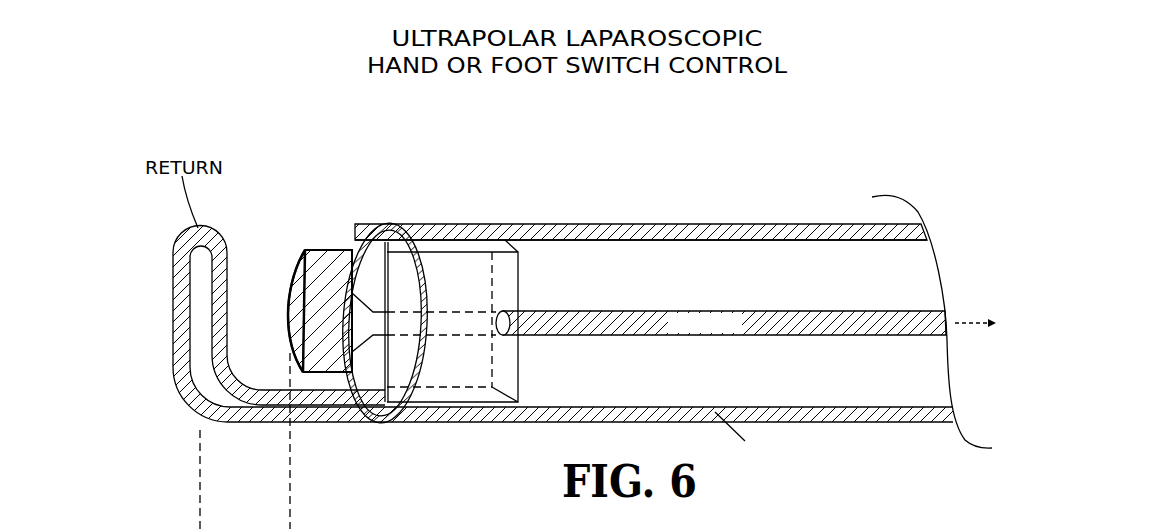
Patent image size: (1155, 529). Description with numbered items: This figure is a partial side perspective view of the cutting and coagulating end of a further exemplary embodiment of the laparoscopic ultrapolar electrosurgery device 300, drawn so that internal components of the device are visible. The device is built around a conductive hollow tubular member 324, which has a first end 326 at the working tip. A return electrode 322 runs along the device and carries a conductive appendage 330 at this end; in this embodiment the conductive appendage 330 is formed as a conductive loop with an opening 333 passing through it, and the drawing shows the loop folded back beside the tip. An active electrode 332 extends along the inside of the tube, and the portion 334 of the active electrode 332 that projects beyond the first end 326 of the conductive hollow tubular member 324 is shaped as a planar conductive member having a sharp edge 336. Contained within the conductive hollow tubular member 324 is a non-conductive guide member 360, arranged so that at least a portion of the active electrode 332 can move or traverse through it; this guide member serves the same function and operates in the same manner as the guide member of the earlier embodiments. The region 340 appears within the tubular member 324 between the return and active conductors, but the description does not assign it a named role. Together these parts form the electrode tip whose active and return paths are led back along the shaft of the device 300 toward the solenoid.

The laparoscopic ultrapolar electrosurgery device 300 is at (722, 175).
The return electrode 322 is at (526, 426).
The conductive hollow tubular member 324 is at (600, 224).
The first end 326 is at (396, 421).
The conductive appendage 330 is at (174, 373).
The active electrode 332 is at (833, 332).
The opening 333 is at (198, 296).
The portion of the active electrode 334 is at (317, 252).
The sharp edge 336 is at (290, 280).
The tube lumen 340 is at (768, 260).
The non-conductive guide member 360 is at (448, 267).